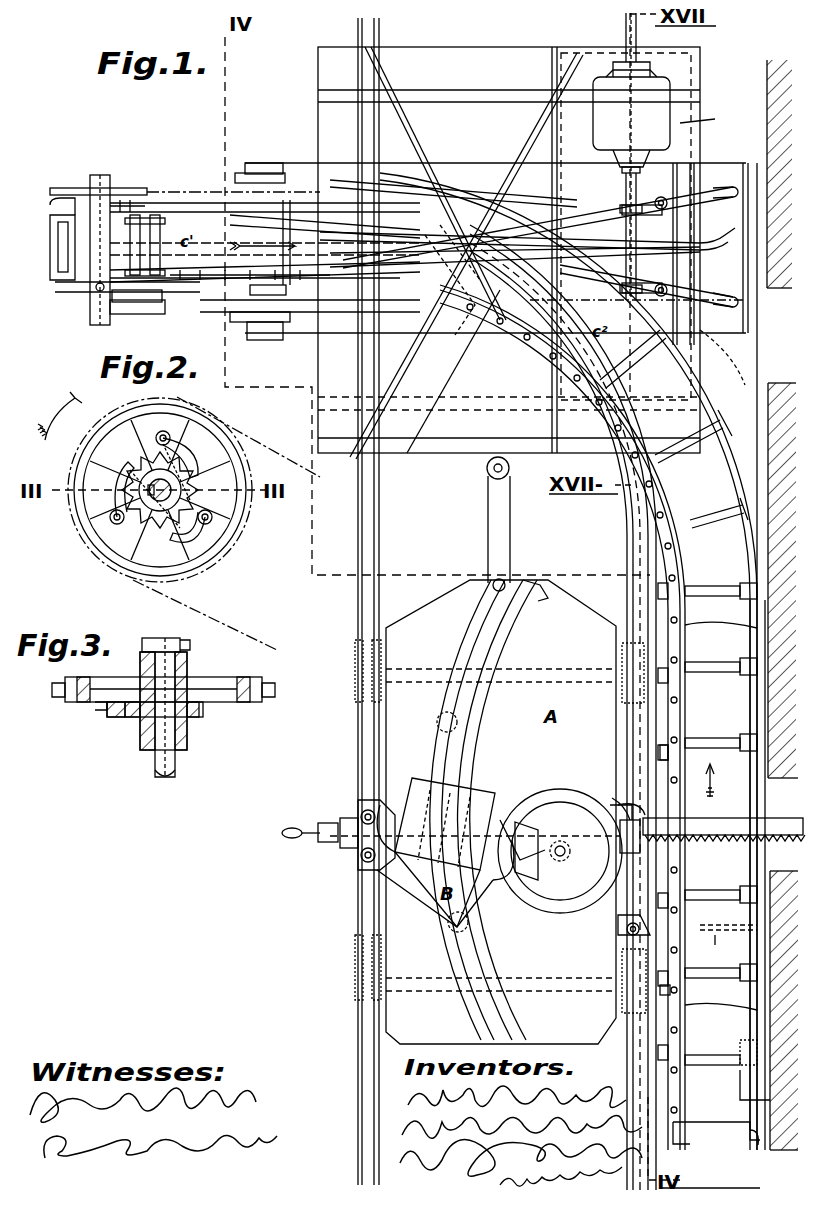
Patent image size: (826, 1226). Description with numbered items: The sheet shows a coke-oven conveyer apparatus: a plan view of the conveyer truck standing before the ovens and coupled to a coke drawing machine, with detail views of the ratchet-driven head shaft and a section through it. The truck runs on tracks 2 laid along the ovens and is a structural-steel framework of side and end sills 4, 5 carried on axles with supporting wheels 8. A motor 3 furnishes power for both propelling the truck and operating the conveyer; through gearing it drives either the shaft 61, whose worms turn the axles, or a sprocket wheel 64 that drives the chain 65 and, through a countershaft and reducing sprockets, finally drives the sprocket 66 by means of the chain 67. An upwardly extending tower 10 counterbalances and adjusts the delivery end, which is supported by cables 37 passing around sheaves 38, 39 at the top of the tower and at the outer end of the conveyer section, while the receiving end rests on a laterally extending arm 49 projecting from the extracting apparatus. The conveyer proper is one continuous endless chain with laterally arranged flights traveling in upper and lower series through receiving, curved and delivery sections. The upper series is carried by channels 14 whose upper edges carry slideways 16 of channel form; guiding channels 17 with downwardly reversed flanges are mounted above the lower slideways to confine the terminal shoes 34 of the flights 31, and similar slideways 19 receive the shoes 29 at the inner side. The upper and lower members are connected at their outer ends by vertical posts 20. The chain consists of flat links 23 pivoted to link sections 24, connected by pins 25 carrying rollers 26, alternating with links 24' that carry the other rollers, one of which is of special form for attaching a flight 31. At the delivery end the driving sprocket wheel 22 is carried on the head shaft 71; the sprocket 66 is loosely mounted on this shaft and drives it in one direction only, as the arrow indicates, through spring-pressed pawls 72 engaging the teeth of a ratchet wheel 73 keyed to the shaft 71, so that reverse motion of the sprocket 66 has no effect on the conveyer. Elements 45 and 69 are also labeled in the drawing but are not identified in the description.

In FIG. 1, the tracks 2 is at (370, 528).
In FIG. 1, the motor 3 is at (662, 156).
In FIG. 1, the side sills 4 is at (458, 58).
In FIG. 1, the end sills 5 is at (700, 280).
In FIG. 1, the supporting wheels 8 is at (380, 118).
In FIG. 1, the tower 10 is at (585, 222).
In FIG. 1, the channels 14 is at (137, 205).
In FIG. 1, the slideways 16 is at (752, 631).
In FIG. 1, the guiding channels 17 is at (738, 468).
In FIG. 1, the slideways 19 is at (662, 715).
In FIG. 1, the vertical posts 20 is at (758, 1110).
In FIG. 1, the driving sprocket wheel 22 is at (85, 292).
In FIG. 1, the flat links 23 is at (672, 988).
In FIG. 1, the link sections 24 is at (707, 880).
In FIG. 1, the links 24' is at (718, 917).
In FIG. 1, the pin 25 is at (676, 1020).
In FIG. 1, the roller 26 is at (670, 720).
In FIG. 1, the shoe 29 is at (660, 757).
In FIG. 1, the flight 31 is at (706, 590).
In FIG. 1, the terminal shoes 34 is at (752, 766).
In FIG. 1, the cables 37 is at (452, 280).
In FIG. 1, the sheave 38 is at (528, 242).
In FIG. 1, the sheave 39 is at (138, 228).
In FIG. 1, the bearing block 45 is at (140, 315).
In FIG. 1, the laterally extending arm 49 is at (707, 960).
In FIG. 1, the shaft 61 is at (625, 190).
In FIG. 1, the sprocket wheel 64 is at (680, 305).
In FIG. 1, the chain 65 is at (315, 313).
In FIG. 1, the driving sprocket 66 is at (70, 187).
In FIG. 2, the driving sprocket 66 is at (246, 520).
In FIG. 3, the driving sprocket 66 is at (228, 682).
In FIG. 1, the chain 67 is at (182, 190).
In FIG. 2, the chain 67 is at (218, 618).
In FIG. 1, the pivot 69 is at (644, 246).
In FIG. 1, the head shaft 71 is at (95, 237).
In FIG. 2, the head shaft 71 is at (158, 500).
In FIG. 3, the head shaft 71 is at (163, 757).
In FIG. 2, the spring-pressed pawls 72 is at (175, 440).
In FIG. 3, the spring-pressed pawls 72 is at (108, 712).
In FIG. 2, the ratchet wheel 73 is at (142, 460).
In FIG. 3, the ratchet wheel 73 is at (204, 710).